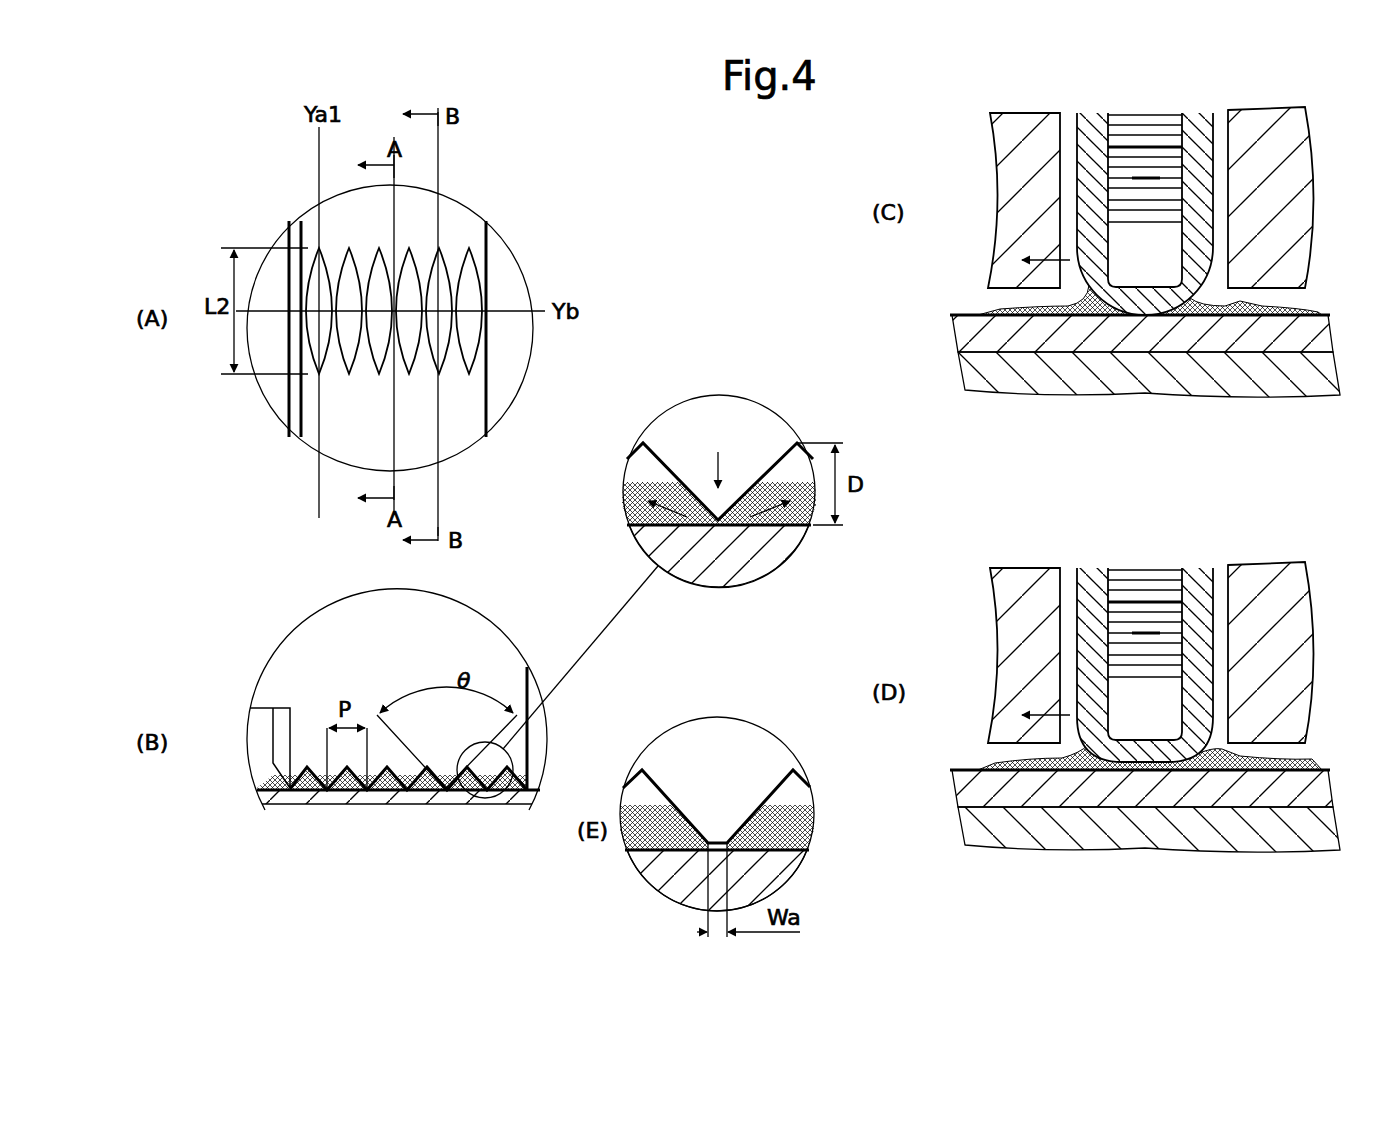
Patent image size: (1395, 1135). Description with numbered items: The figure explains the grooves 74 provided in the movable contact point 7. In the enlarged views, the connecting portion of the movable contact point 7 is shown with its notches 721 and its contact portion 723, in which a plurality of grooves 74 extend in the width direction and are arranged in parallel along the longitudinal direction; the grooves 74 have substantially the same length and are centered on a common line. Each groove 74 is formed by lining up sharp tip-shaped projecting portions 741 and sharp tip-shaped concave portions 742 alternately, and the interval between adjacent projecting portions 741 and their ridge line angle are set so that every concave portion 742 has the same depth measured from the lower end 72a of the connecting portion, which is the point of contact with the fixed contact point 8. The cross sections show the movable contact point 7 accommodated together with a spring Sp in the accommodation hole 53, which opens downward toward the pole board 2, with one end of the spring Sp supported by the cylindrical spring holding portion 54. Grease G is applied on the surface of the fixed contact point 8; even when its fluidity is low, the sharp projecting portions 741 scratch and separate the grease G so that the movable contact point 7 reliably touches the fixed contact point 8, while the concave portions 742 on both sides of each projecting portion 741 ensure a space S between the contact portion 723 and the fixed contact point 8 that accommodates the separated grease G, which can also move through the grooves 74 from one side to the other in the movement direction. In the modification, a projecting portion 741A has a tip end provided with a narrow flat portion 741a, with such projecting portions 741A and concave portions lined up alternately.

The pole board 2 is at (1322, 378).
The movable contact point 7 is at (1093, 137).
The fixed contact point 8 is at (262, 800).
The accommodation hole 53 is at (1220, 160).
The spring holding portion 54 is at (1167, 157).
The lower end 72a is at (723, 528).
The grooves 74 is at (599, 194).
The notches 721 is at (285, 399).
The contact portion 723 is at (464, 412).
The projecting portion 741 is at (369, 279).
The projecting portion 741A is at (720, 842).
The flat portion 741a is at (730, 846).
The concave portion 742 is at (369, 360).
The spring Sp is at (1148, 117).
The grease G is at (265, 778).
The space S is at (640, 470).